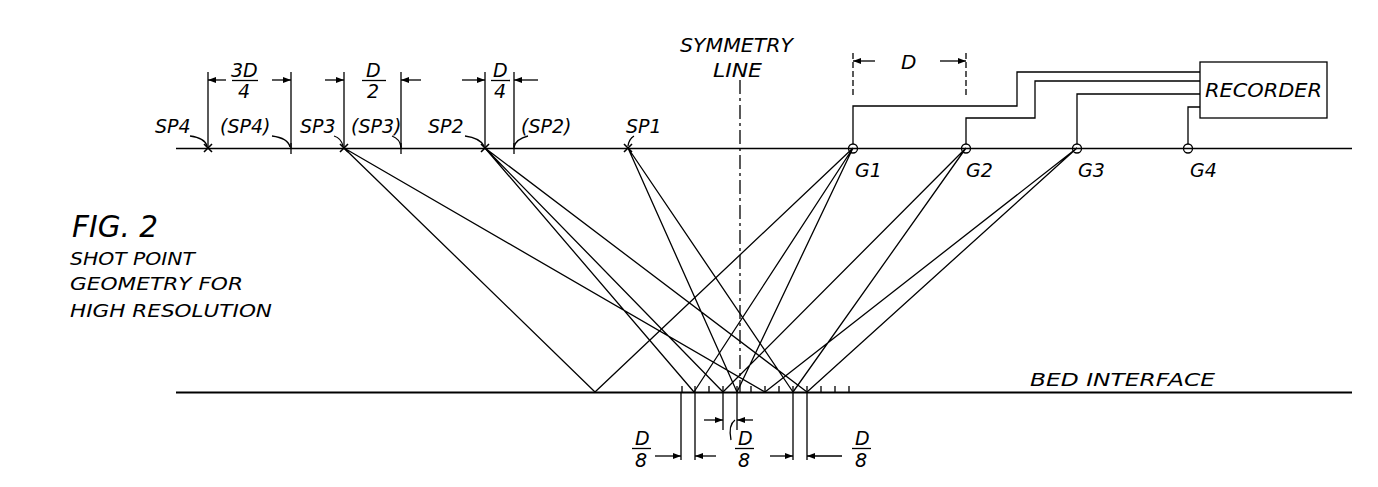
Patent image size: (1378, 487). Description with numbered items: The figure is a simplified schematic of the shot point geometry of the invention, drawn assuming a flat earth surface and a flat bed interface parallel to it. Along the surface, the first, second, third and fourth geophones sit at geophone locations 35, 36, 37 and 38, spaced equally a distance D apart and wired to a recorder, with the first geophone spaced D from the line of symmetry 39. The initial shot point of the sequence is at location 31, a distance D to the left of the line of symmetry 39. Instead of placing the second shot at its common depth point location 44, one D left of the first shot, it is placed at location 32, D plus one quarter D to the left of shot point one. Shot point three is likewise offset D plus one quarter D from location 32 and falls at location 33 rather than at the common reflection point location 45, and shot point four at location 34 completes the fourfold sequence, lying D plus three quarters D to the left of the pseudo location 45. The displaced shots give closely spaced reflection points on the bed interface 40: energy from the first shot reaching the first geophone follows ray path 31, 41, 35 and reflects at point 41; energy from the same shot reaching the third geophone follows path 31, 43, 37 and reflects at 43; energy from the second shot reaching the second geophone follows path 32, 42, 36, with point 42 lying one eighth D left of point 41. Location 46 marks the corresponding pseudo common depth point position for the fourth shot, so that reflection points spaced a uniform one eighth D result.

The initial shot point location 31 is at (628, 152).
The shot point 2 location 32 is at (485, 152).
The shot point 3 location 33 is at (344, 152).
The shot point 4 location 34 is at (208, 152).
The geophone G1 location 35 is at (857, 145).
The geophone G2 location 36 is at (970, 145).
The geophone G3 location 37 is at (1081, 145).
The geophone G4 location 38 is at (1192, 146).
The line of symmetry 39 is at (742, 126).
The bed interface 40 is at (1158, 296).
The reflection point 41 is at (738, 396).
The reflection point 42 is at (722, 396).
The reflection point 43 is at (766, 394).
The common depth point location of shot point 2 44 is at (514, 153).
The common depth point location of shot point 3 45 is at (401, 153).
The alternate shot point (SP4) 46 is at (291, 153).